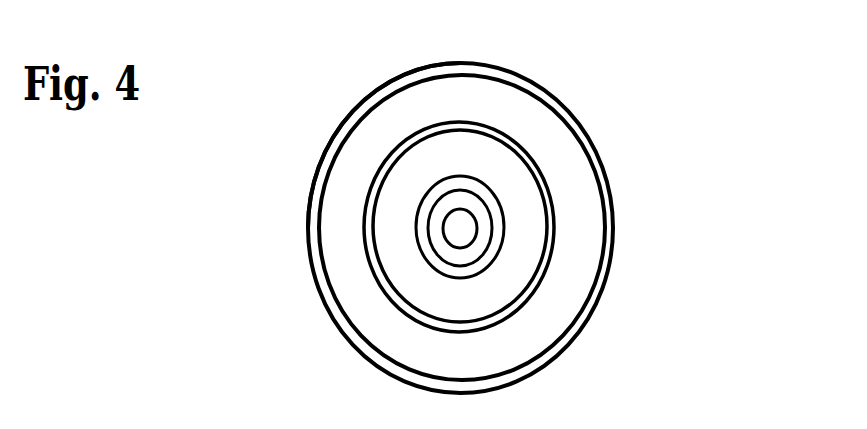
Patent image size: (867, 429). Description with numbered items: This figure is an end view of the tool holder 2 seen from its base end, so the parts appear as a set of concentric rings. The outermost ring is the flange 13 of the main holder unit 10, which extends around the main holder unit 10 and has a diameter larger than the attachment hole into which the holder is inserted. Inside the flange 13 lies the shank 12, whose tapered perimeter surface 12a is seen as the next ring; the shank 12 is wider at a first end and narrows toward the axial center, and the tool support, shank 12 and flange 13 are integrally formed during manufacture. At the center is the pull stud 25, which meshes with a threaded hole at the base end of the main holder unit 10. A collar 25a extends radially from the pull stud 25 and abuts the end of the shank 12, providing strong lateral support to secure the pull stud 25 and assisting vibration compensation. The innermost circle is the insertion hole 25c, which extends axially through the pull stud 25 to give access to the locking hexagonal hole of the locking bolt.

The tool holder 2 is at (647, 122).
The main holder unit 10 is at (542, 83).
The shank 12 is at (538, 294).
The tapered perimeter surface 12a is at (548, 254).
The flange 13 is at (378, 87).
The pull stud 25 is at (433, 268).
The collar 25a is at (423, 240).
The insertion hole 25c is at (454, 220).